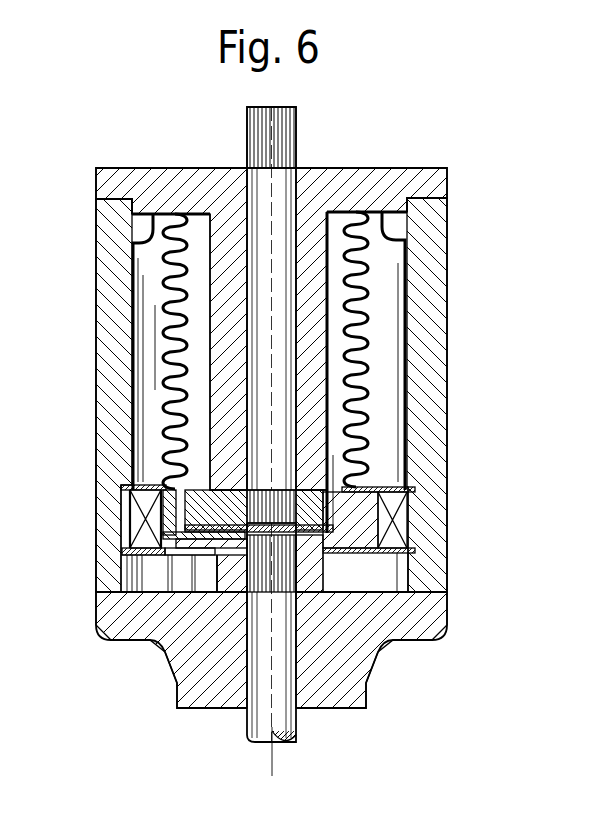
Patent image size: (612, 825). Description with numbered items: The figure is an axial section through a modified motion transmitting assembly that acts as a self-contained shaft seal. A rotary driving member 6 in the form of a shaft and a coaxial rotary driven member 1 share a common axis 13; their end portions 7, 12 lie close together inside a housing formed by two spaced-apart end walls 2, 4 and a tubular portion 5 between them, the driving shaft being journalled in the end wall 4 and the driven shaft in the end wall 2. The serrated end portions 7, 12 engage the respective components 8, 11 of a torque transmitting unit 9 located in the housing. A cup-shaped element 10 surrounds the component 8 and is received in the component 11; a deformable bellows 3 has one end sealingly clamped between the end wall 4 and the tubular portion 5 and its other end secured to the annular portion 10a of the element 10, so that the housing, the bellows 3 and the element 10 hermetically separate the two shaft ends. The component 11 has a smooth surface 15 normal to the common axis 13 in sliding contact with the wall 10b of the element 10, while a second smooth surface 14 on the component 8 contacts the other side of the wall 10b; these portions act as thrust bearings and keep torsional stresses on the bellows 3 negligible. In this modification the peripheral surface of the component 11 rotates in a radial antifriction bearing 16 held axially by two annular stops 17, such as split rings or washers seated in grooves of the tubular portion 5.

The rotary driven member 1 is at (283, 700).
The end wall 2 is at (378, 626).
The bellows 3 is at (350, 296).
The end wall 4 is at (423, 181).
The tubular portion 5 is at (426, 340).
The rotary driving member 6 is at (268, 192).
The end portion of driving shaft 7 is at (333, 455).
The component of torque transmitting unit 8 is at (222, 487).
The torque transmitting unit 9 is at (185, 565).
The cup-shaped element 10 is at (145, 513).
The annular portion of cup-shaped element 10a is at (400, 507).
The wall of cup-shaped element 10b is at (308, 540).
The component of torque transmitting unit 11 is at (357, 535).
The end portion of driven shaft 12 is at (283, 579).
The common axis 13 is at (272, 765).
The second smooth surface 14 is at (170, 490).
The smooth surface 15 is at (157, 550).
The radial antifriction bearing 16 is at (140, 521).
The annular stops 17 is at (126, 487).